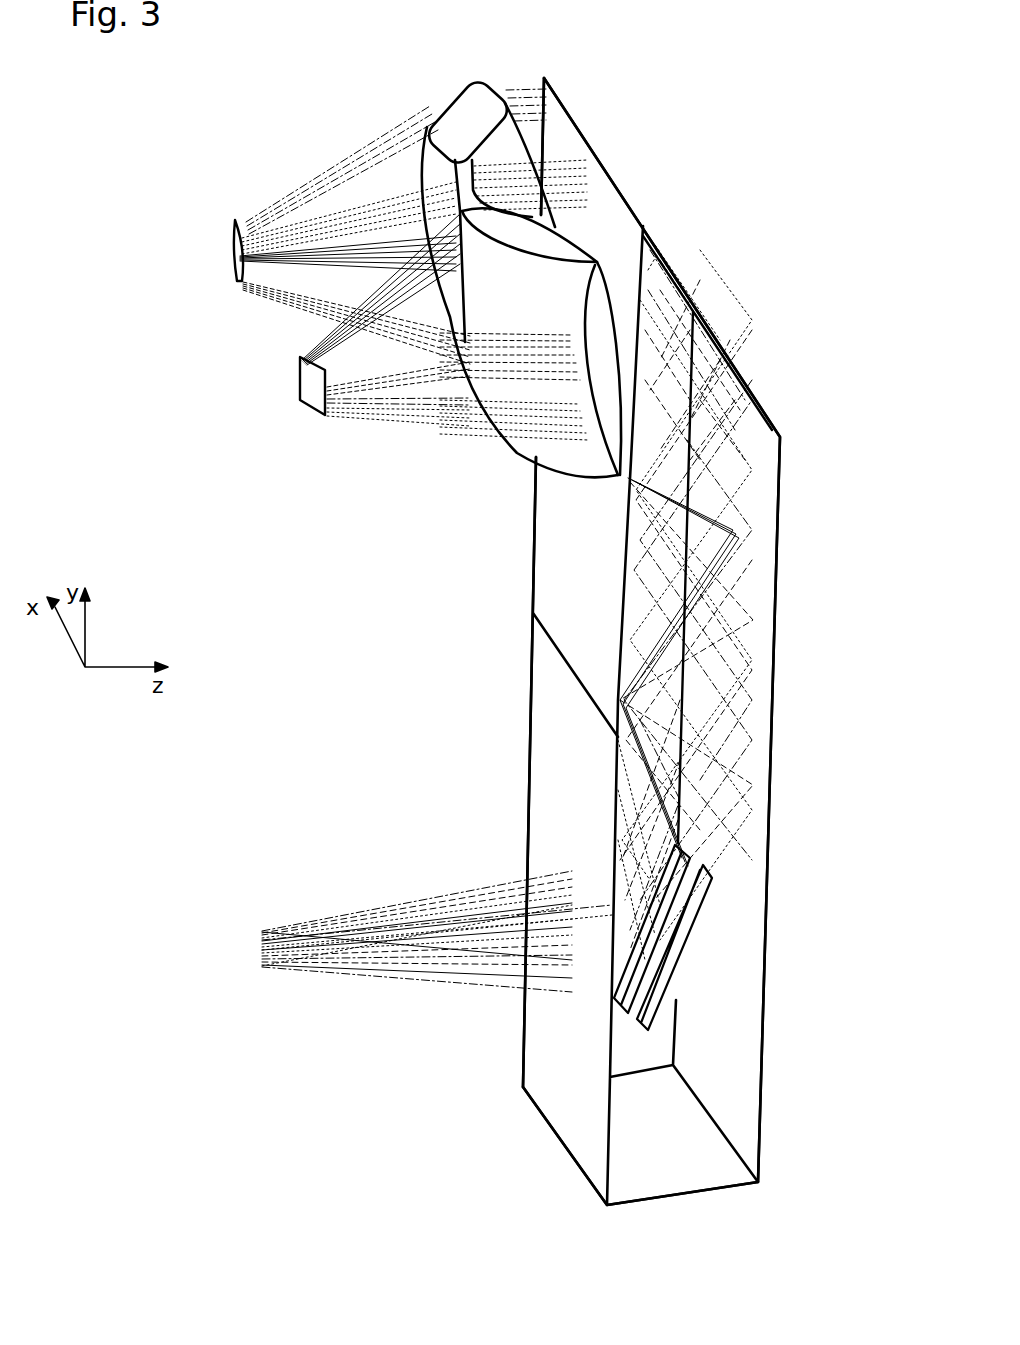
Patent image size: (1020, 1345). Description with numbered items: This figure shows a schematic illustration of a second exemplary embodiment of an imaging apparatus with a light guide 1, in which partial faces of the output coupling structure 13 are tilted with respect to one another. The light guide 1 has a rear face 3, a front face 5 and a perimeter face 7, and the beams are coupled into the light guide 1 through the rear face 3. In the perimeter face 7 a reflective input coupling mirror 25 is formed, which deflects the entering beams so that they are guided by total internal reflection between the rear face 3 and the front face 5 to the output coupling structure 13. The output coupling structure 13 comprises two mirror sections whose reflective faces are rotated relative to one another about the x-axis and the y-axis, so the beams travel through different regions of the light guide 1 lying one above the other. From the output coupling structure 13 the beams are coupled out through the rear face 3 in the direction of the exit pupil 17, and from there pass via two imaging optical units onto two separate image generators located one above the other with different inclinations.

The light guide 1 is at (707, 1042).
The rear face 3 is at (560, 507).
The front face 5 is at (773, 753).
The perimeter face 7 is at (653, 1170).
The output coupling structure 13 is at (726, 937).
The exit pupil 17 is at (260, 967).
The input coupling mirror 25 is at (668, 258).